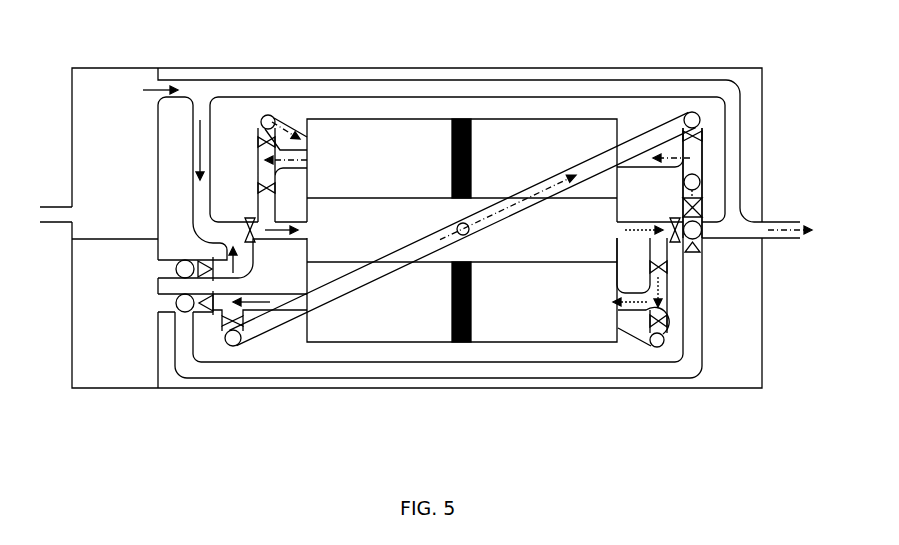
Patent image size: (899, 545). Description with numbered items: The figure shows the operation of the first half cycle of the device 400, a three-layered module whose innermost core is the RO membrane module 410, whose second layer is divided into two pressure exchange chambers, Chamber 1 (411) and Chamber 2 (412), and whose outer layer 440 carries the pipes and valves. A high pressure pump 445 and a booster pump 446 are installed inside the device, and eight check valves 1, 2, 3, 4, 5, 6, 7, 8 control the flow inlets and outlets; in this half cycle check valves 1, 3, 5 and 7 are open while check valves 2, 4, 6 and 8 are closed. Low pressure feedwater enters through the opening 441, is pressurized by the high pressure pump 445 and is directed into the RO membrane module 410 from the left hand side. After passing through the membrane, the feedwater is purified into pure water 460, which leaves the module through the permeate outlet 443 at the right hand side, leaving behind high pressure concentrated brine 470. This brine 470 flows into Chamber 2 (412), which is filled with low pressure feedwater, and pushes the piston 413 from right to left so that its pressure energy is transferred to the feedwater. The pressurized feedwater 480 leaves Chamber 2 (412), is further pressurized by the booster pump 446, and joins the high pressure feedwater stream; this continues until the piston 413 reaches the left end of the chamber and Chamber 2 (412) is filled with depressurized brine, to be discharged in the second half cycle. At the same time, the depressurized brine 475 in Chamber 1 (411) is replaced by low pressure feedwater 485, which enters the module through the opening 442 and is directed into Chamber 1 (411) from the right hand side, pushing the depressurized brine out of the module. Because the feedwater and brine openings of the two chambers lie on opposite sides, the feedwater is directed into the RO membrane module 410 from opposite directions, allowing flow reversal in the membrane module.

The fluid handling system 400 is at (436, 214).
The RO membrane module 410 is at (462, 230).
The Chamber 1 411 is at (462, 174).
The Chamber 2 412 is at (462, 288).
The piston 413 is at (466, 344).
The outer layer 440 is at (717, 228).
The low pressure feedwater inlet for the high pressure pump 441 is at (56, 203).
The low pressure feedwater inlet for the pressure exchanger 442 is at (458, 226).
The permeate outlet 443 is at (790, 243).
The high pressure pump 445 is at (115, 183).
The booster pump 446 is at (123, 333).
The pure water 460 is at (759, 219).
The high pressure concentrated brine 470 is at (632, 303).
The depressurized brine 475 is at (301, 139).
The pressurized feedwater 480 is at (262, 318).
The low pressure feedwater 485 is at (678, 112).
The check valve 1 is at (258, 142).
The check valve 2 is at (258, 190).
The check valve 3 is at (250, 239).
The check valve 4 is at (226, 325).
The check valve 5 is at (698, 136).
The check valve 6 is at (683, 220).
The check valve 7 is at (665, 269).
The check valve 8 is at (665, 324).